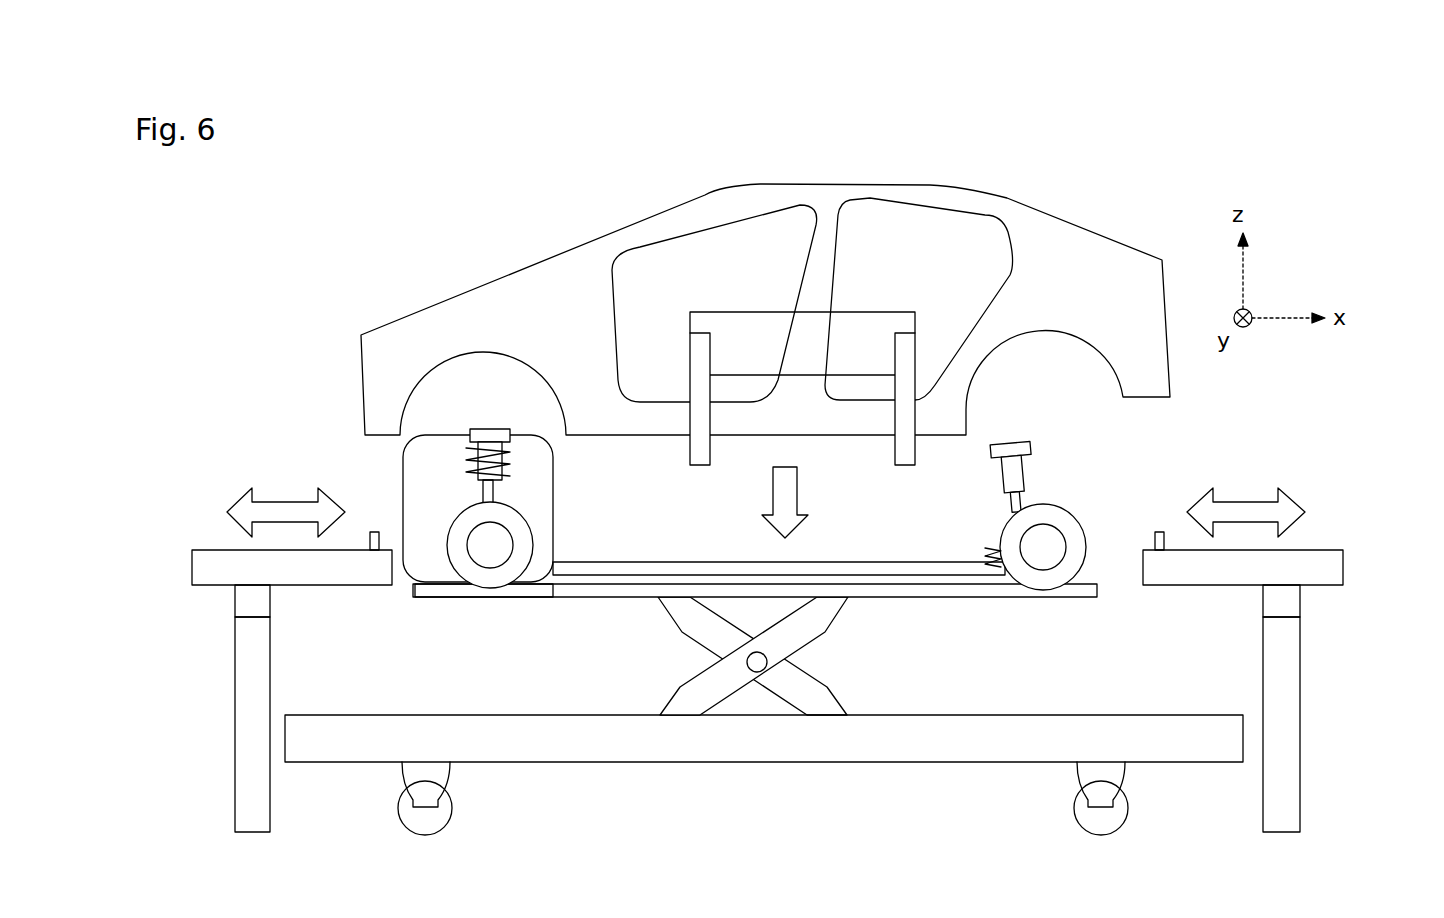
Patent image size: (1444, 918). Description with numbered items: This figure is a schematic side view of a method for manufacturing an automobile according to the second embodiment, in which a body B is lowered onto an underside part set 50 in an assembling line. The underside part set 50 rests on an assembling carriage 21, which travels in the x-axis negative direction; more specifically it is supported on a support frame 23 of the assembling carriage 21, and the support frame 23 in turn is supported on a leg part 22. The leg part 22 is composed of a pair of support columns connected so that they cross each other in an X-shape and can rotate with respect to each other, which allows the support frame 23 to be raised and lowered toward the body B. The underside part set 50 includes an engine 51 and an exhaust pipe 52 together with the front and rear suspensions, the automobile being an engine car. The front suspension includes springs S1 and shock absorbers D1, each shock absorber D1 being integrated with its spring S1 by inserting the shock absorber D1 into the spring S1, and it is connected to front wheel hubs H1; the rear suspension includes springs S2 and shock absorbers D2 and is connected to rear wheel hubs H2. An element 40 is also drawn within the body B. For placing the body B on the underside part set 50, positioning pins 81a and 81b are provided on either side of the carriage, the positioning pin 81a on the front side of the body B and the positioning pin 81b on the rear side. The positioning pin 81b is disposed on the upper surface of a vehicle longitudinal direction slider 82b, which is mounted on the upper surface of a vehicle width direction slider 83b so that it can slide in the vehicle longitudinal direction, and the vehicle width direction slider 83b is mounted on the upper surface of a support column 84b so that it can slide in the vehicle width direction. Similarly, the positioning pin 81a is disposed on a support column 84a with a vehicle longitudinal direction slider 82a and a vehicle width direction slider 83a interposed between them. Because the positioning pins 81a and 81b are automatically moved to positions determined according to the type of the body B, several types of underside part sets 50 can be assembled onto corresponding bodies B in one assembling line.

The body B is at (565, 262).
The seat / loaded object 40 is at (757, 300).
The underside part set 50 is at (396, 475).
The spring S1 is at (465, 458).
The shock absorber D1 is at (505, 471).
The front wheel hub H1 is at (500, 541).
The engine 51 is at (432, 592).
The exhaust pipe 52 is at (648, 568).
The support frame 23 is at (604, 592).
The leg part 22 is at (828, 625).
The assembling carriage 21 is at (765, 763).
The spring S2 is at (993, 540).
The shock absorber D2 is at (1020, 471).
The rear wheel hub H2 is at (1043, 570).
The positioning pin 81a is at (375, 531).
The vehicle longitudinal direction slider 82a is at (192, 566).
The vehicle width direction slider 83a is at (238, 603).
The support column 84a is at (236, 684).
The positioning pin 81b is at (1158, 531).
The vehicle longitudinal direction slider 82b is at (1343, 566).
The vehicle width direction slider 83b is at (1300, 604).
The support column 84b is at (1300, 685).